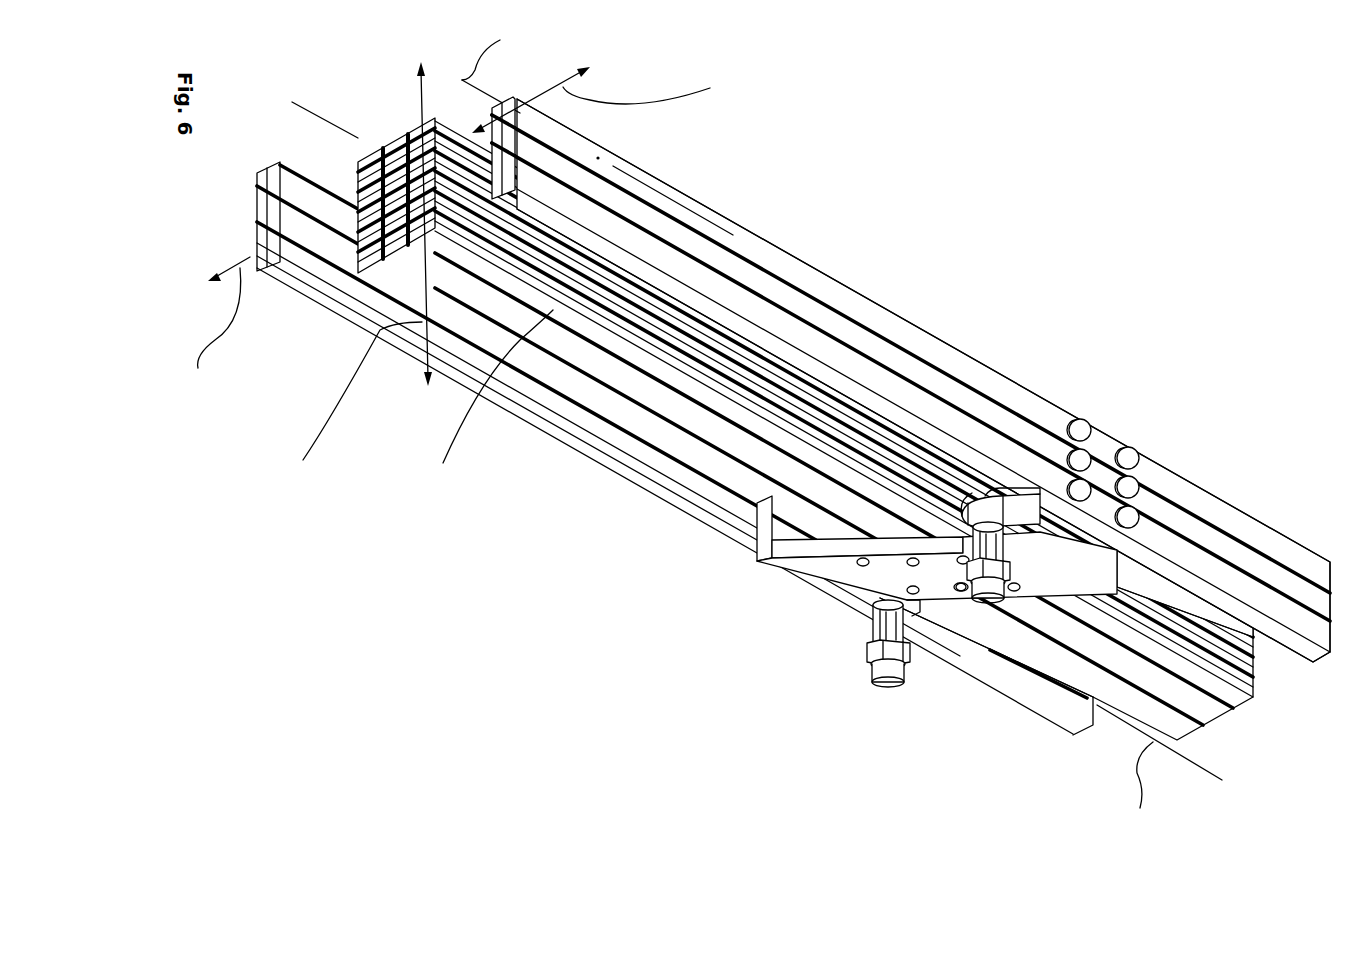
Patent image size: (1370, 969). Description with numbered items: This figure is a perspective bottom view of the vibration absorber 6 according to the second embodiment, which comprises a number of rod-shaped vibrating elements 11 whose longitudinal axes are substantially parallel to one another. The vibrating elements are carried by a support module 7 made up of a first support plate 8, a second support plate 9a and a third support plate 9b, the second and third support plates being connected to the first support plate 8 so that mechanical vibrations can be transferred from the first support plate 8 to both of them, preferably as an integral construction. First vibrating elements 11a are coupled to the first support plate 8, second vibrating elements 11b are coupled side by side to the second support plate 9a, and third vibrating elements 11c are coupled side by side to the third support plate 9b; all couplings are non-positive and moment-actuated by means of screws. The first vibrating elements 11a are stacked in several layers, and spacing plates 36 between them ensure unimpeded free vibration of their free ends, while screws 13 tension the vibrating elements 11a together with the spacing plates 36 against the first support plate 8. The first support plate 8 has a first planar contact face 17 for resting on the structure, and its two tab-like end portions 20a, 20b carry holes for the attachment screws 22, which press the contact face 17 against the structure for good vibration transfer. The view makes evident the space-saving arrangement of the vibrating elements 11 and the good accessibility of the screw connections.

The vibration absorber 6 is at (994, 176).
The support module 7 is at (791, 619).
The first support plate 8 is at (826, 555).
The second support plate 9a is at (760, 523).
The third support plate 9b is at (1043, 515).
The vibrating elements 11 is at (793, 408).
The first vibrating elements 11a is at (380, 272).
The second vibrating elements 11b is at (272, 172).
The third vibrating elements 11c is at (748, 240).
The screws 13 is at (1090, 424).
The first planar contact face 17 is at (850, 590).
The end portion 20a is at (936, 620).
The end portion 20b is at (948, 500).
The attachment screws 22 is at (860, 678).
The spacing plates 36 is at (985, 490).